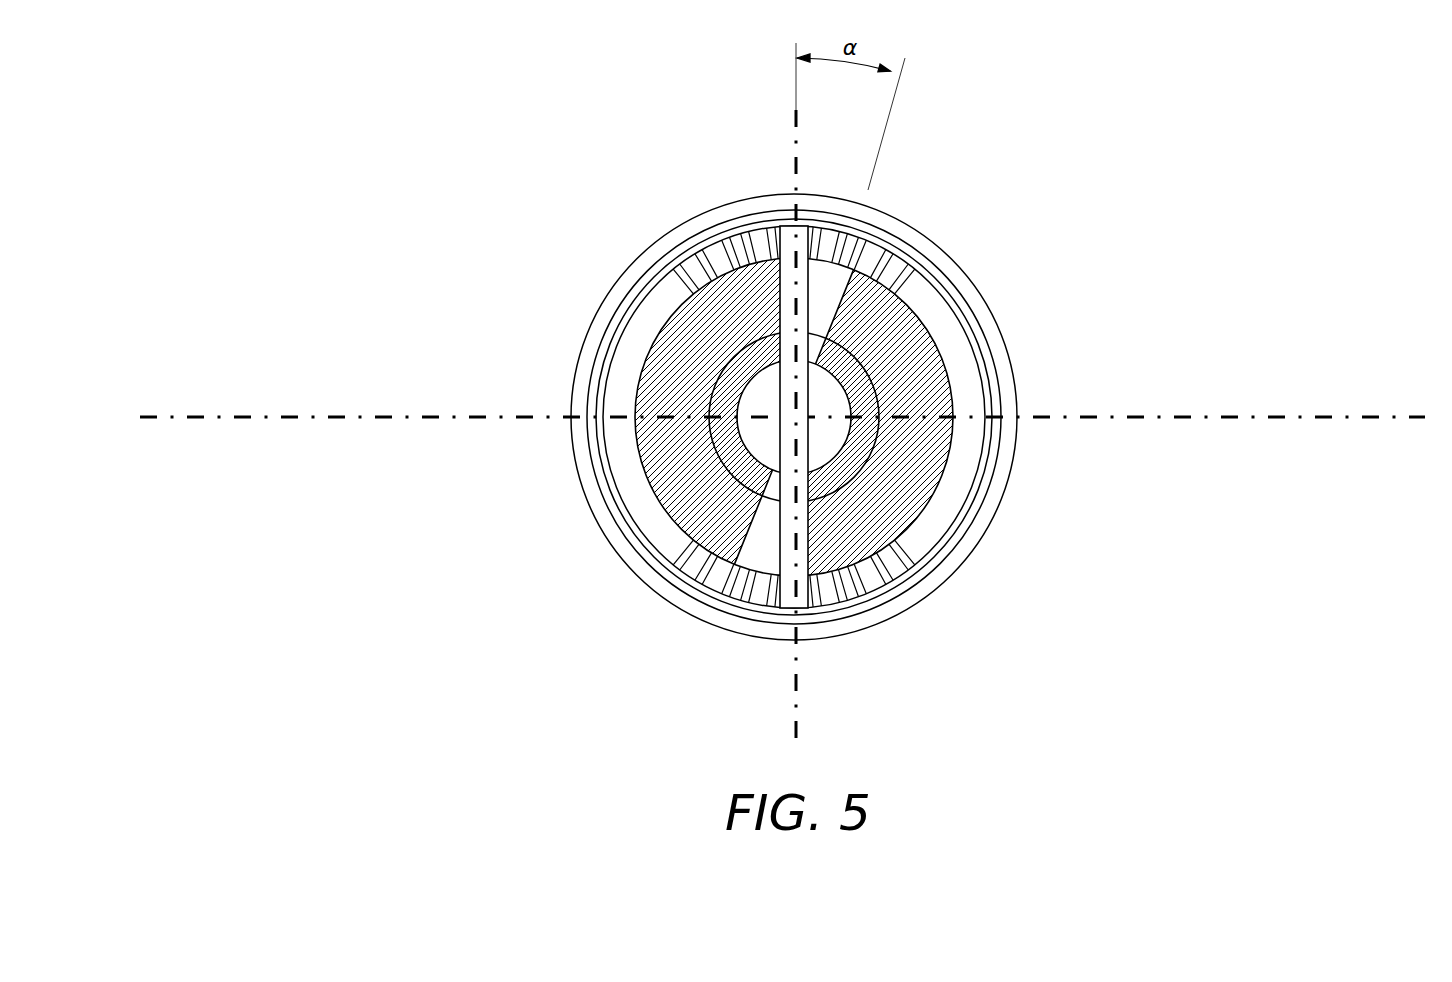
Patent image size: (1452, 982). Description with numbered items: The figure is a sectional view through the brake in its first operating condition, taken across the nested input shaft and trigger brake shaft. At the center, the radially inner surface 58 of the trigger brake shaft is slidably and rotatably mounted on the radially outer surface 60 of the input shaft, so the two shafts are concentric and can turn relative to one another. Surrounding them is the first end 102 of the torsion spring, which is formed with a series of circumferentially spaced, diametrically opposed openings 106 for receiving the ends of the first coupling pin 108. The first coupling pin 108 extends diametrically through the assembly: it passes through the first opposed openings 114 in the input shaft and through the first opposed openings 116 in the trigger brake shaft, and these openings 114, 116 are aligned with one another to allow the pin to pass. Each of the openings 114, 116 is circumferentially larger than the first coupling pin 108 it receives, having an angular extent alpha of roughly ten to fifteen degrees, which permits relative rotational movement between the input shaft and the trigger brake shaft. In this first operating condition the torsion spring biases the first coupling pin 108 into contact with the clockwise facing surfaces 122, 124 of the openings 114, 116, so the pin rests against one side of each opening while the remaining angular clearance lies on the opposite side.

The radially inner surface 58 is at (887, 382).
The radially outer surface 60 is at (880, 437).
The first end 102 is at (973, 338).
The openings 106 is at (903, 267).
The first coupling pin 108 is at (808, 598).
The first opposed openings 114 is at (817, 350).
The first opposed openings 116 is at (826, 272).
The clockwise facing surface 122 is at (737, 350).
The clockwise facing surface 124 is at (777, 297).